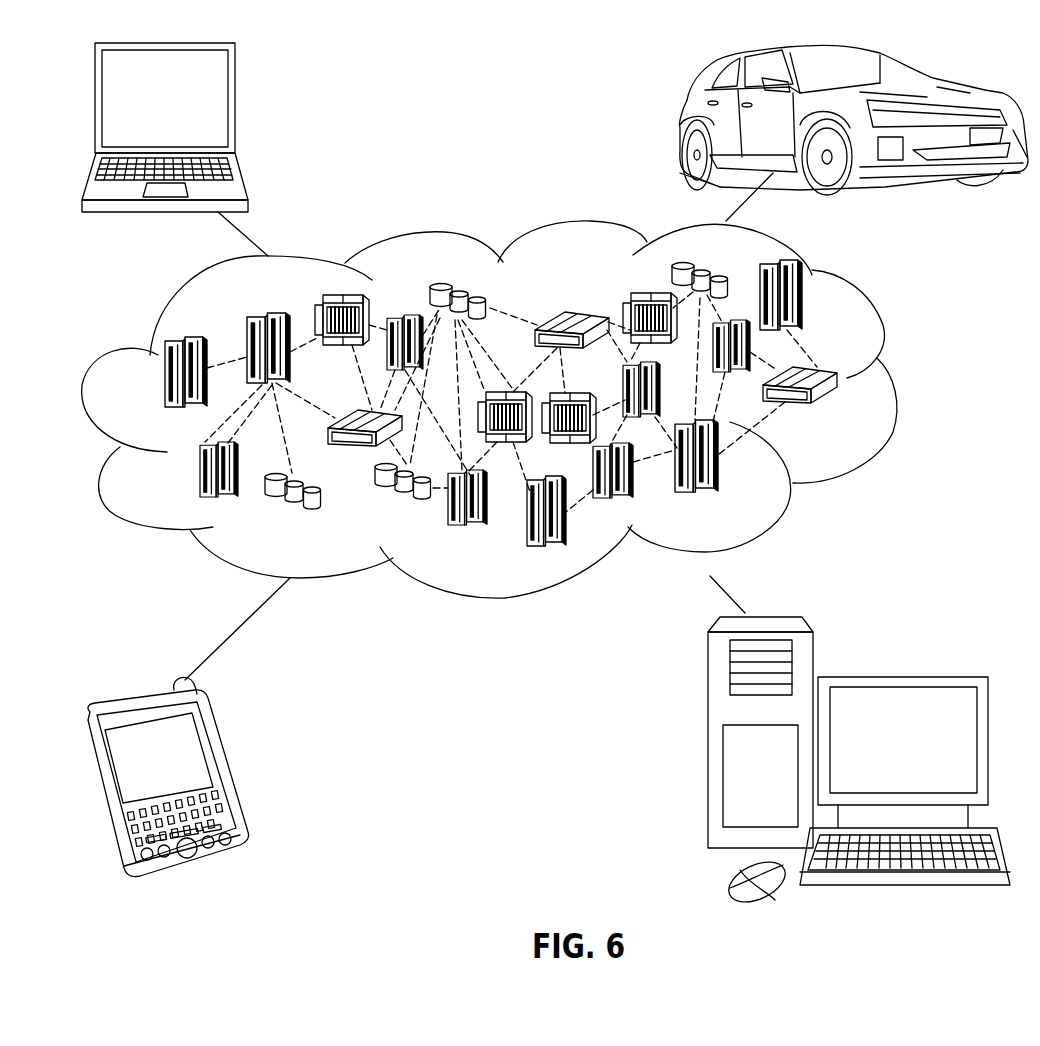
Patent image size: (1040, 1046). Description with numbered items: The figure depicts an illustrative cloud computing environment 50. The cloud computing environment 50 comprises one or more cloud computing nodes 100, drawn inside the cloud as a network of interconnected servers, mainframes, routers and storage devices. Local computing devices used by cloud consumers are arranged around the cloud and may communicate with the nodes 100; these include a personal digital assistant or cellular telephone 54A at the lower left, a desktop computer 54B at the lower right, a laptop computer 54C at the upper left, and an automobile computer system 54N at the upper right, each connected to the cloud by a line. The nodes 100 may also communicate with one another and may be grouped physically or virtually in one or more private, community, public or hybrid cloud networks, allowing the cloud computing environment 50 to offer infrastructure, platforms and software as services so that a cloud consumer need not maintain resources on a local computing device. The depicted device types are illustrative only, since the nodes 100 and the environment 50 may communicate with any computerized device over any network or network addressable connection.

The cloud computing environment 50 is at (903, 378).
The cloud computing nodes 100 is at (567, 403).
The personal digital assistant or cellular telephone 54A is at (225, 768).
The desktop computer 54B is at (900, 676).
The laptop computer 54C is at (235, 105).
The automobile computer system 54N is at (682, 122).